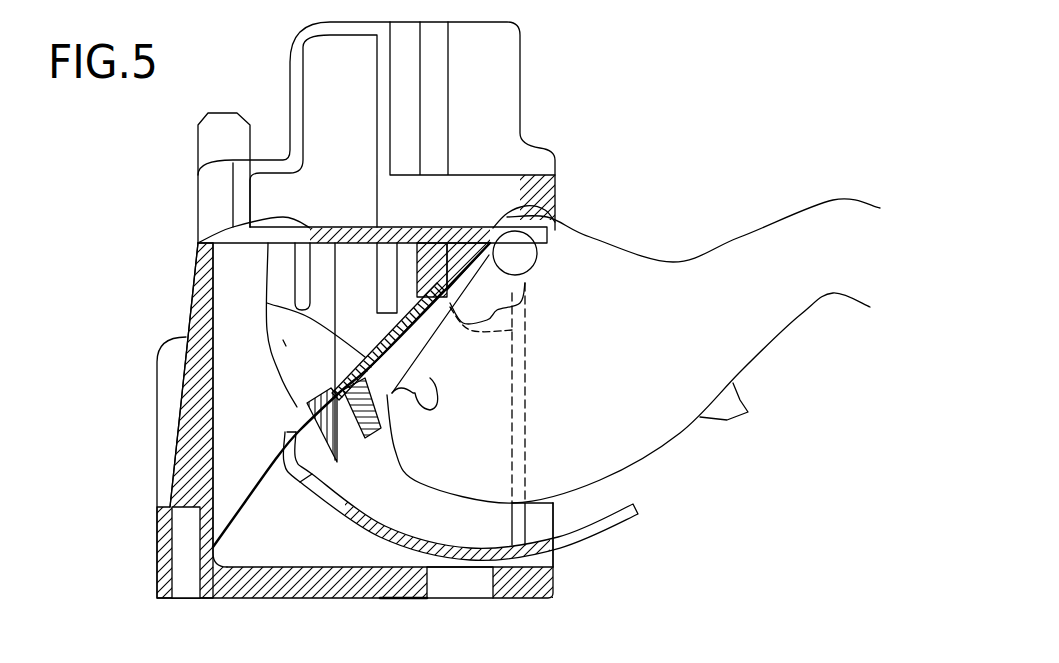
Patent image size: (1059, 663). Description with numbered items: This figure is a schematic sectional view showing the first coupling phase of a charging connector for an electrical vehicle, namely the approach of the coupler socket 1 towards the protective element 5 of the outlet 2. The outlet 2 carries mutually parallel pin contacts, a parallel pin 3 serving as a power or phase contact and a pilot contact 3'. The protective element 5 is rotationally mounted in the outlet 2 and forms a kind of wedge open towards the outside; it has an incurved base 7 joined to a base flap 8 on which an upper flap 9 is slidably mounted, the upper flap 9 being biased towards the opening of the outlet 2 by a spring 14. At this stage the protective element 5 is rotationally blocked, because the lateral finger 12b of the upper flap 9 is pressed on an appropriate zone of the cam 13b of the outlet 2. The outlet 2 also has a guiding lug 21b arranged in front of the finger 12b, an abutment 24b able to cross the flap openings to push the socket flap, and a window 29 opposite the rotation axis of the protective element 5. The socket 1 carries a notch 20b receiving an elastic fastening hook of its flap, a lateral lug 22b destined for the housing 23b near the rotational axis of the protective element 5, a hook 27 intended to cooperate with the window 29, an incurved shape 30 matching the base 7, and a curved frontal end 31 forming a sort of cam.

The coupler socket 1 is at (686, 222).
The outlet 2 is at (178, 165).
The parallel pin 3 is at (485, 188).
The pilot contact 3' is at (226, 270).
The protective element 5 is at (450, 585).
The incurved base 7 is at (553, 550).
The base flap 8 is at (267, 305).
The upper flap 9 is at (320, 397).
The lateral finger 12b is at (300, 428).
The cam 13b is at (283, 340).
The spring 14 is at (172, 507).
The notch 20b is at (413, 395).
The guiding lug 21b is at (362, 403).
The lateral lug 22b is at (535, 237).
The housing 23b is at (527, 283).
The abutment 24b is at (452, 235).
The hook 27 is at (730, 423).
The window 29 is at (477, 598).
The incurved shape 30 is at (597, 492).
The frontal end 31 is at (387, 437).